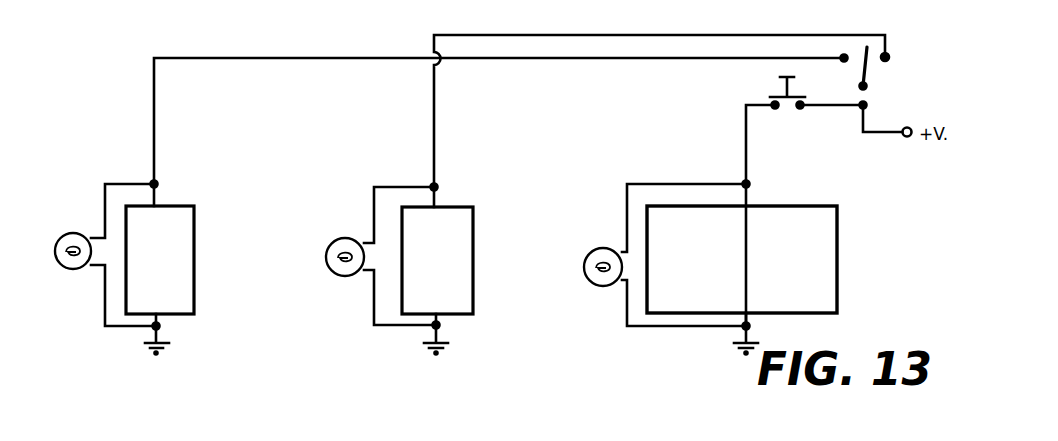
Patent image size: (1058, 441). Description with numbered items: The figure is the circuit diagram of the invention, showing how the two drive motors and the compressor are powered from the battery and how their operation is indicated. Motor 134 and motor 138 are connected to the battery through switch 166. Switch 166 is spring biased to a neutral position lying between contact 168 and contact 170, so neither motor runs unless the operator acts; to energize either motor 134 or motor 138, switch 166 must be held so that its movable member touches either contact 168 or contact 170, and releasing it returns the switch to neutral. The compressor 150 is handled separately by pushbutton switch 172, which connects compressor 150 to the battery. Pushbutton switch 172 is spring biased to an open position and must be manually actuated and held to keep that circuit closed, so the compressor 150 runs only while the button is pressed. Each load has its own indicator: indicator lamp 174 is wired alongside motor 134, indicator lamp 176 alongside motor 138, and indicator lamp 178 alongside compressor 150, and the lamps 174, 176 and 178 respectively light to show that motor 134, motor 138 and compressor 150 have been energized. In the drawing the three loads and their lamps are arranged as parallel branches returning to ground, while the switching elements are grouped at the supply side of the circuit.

The motor 138 is at (167, 286).
The motor 134 is at (452, 287).
The compressor 150 is at (757, 295).
The indicator lamp 176 is at (70, 269).
The indicator lamp 174 is at (340, 276).
The indicator lamp 178 is at (595, 285).
The pushbutton switch 172 is at (770, 87).
The contact 168 is at (842, 61).
The switch 166 is at (872, 73).
The contact 170 is at (895, 53).